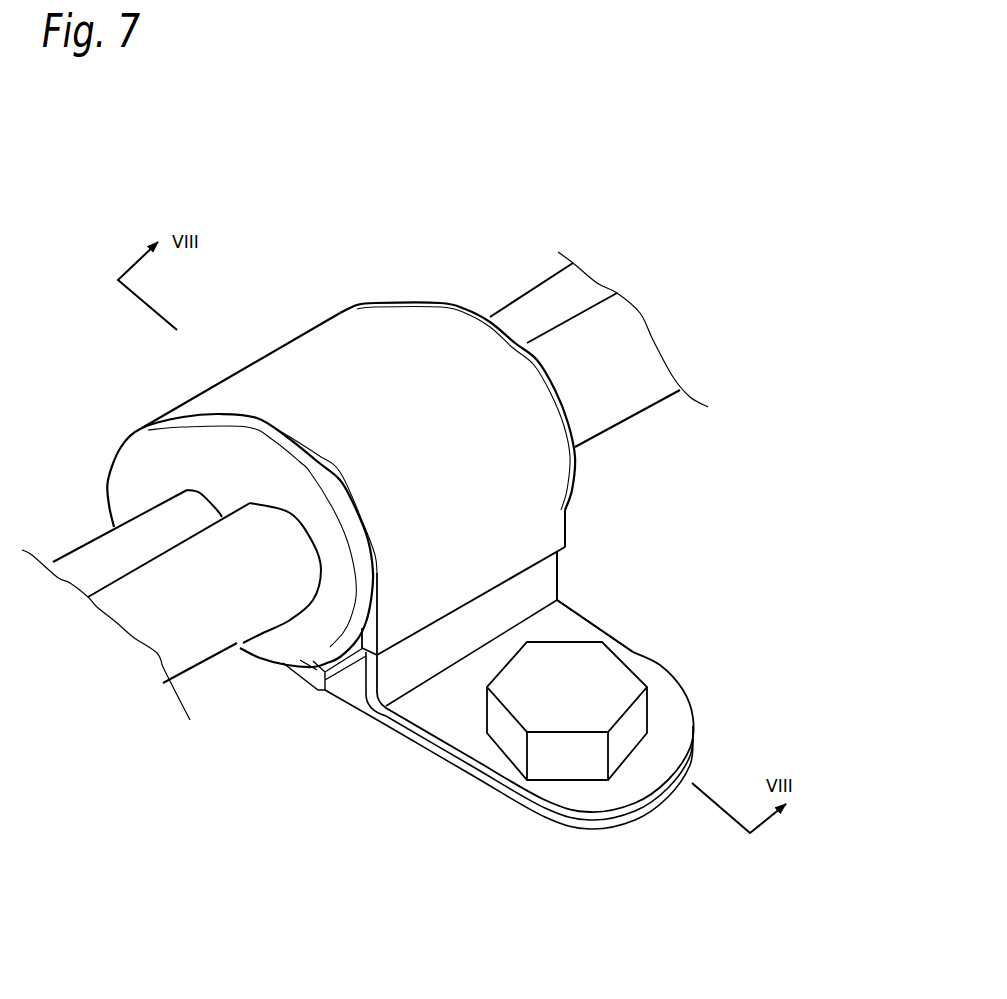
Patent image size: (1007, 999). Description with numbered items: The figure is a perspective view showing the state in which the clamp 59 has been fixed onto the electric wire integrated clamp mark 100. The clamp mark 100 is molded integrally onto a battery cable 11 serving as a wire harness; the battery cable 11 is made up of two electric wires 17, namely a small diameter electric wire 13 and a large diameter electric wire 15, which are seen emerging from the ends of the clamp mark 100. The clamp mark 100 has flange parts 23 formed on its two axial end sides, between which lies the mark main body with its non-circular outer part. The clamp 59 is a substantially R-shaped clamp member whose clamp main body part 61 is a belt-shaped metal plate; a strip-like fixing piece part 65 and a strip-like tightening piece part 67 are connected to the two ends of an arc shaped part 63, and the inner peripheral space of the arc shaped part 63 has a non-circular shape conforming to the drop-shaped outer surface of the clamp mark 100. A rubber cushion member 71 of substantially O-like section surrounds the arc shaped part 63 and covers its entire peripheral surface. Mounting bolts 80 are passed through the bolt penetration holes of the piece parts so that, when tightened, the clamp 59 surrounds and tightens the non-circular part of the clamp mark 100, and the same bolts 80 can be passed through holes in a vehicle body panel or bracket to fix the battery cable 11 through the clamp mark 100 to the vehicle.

The battery cable 11 is at (443, 123).
The electric wire integrated clamp mark 100 is at (445, 298).
The electric wires 17 is at (507, 163).
The small diameter electric wire 13 is at (537, 308).
The large diameter electric wire 15 is at (622, 350).
The clamp 59 is at (312, 312).
The cushion member 71 is at (277, 370).
The flange parts 23 is at (573, 465).
The arc shaped part 63 is at (564, 566).
The mounting bolts 80 is at (592, 671).
The tightening piece part 67 is at (673, 717).
The clamp main body part 61 is at (424, 760).
The fixing piece part 65 is at (542, 823).